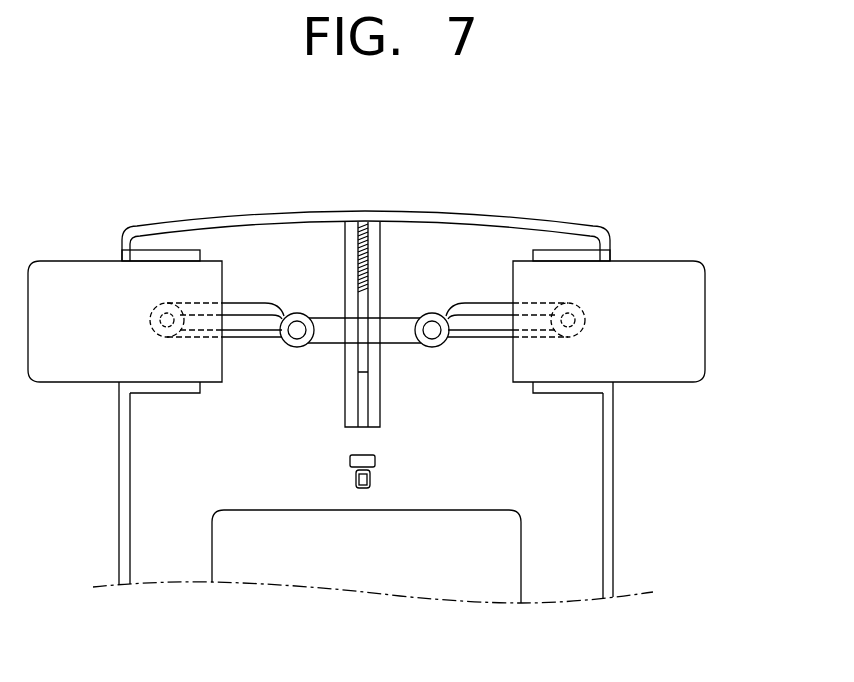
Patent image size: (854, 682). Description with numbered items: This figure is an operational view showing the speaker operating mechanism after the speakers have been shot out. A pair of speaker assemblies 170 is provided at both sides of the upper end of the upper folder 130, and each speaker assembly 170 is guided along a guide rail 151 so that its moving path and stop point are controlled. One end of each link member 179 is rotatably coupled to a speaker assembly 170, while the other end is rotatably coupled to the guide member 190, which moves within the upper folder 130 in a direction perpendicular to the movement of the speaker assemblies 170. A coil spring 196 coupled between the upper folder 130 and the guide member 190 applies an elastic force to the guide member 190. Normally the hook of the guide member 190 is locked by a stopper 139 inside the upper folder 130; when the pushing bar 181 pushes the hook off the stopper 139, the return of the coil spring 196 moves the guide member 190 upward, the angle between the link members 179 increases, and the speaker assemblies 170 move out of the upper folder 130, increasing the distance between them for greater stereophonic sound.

The upper folder 130 is at (622, 508).
The stopper 139 is at (352, 468).
The guide rails 151 is at (233, 308).
The speaker assemblies 170 is at (75, 275).
The link members 179 is at (253, 323).
The pushing bar 181 is at (366, 490).
The guide member 190 is at (397, 330).
The coil spring 196 is at (355, 233).